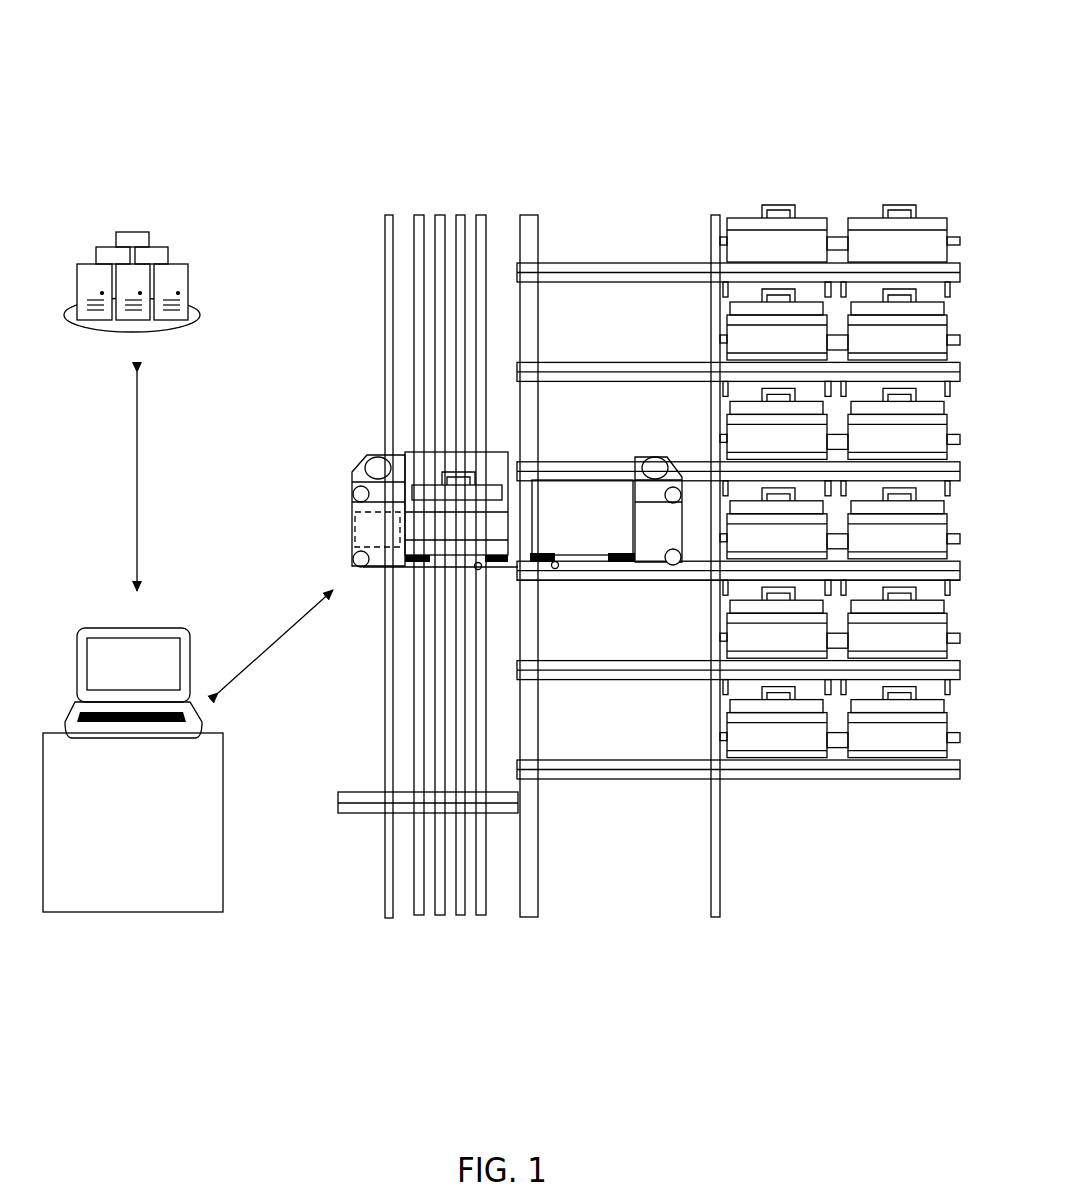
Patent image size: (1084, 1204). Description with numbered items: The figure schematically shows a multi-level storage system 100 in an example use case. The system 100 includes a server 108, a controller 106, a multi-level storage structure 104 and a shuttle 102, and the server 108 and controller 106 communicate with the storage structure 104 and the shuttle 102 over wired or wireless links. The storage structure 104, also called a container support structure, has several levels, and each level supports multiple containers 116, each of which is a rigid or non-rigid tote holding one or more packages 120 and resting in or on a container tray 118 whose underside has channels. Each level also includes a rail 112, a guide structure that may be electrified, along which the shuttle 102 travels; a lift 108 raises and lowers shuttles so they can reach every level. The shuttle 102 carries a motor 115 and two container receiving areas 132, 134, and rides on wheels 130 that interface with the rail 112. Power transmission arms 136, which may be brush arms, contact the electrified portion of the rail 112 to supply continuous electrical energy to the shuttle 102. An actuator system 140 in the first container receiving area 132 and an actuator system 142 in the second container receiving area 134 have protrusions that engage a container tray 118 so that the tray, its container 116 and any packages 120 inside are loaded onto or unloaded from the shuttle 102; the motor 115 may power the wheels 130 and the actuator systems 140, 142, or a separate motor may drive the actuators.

The multi-level storage system 100 is at (345, 92).
The shuttle 102 is at (325, 479).
The multi-level storage structure 104 is at (680, 177).
The controller 106 is at (163, 628).
The server 108 is at (437, 214).
The rail 112 is at (618, 583).
The motor 115 is at (346, 518).
The container 116 is at (818, 222).
The container tray 118 is at (743, 225).
The package 120 is at (808, 223).
The wheels 130 is at (354, 562).
The container receiving area 132 is at (430, 458).
The container receiving area 134 is at (584, 492).
The power transmission arms 136 is at (568, 560).
The actuator system 140 is at (403, 548).
The actuator system 142 is at (625, 555).